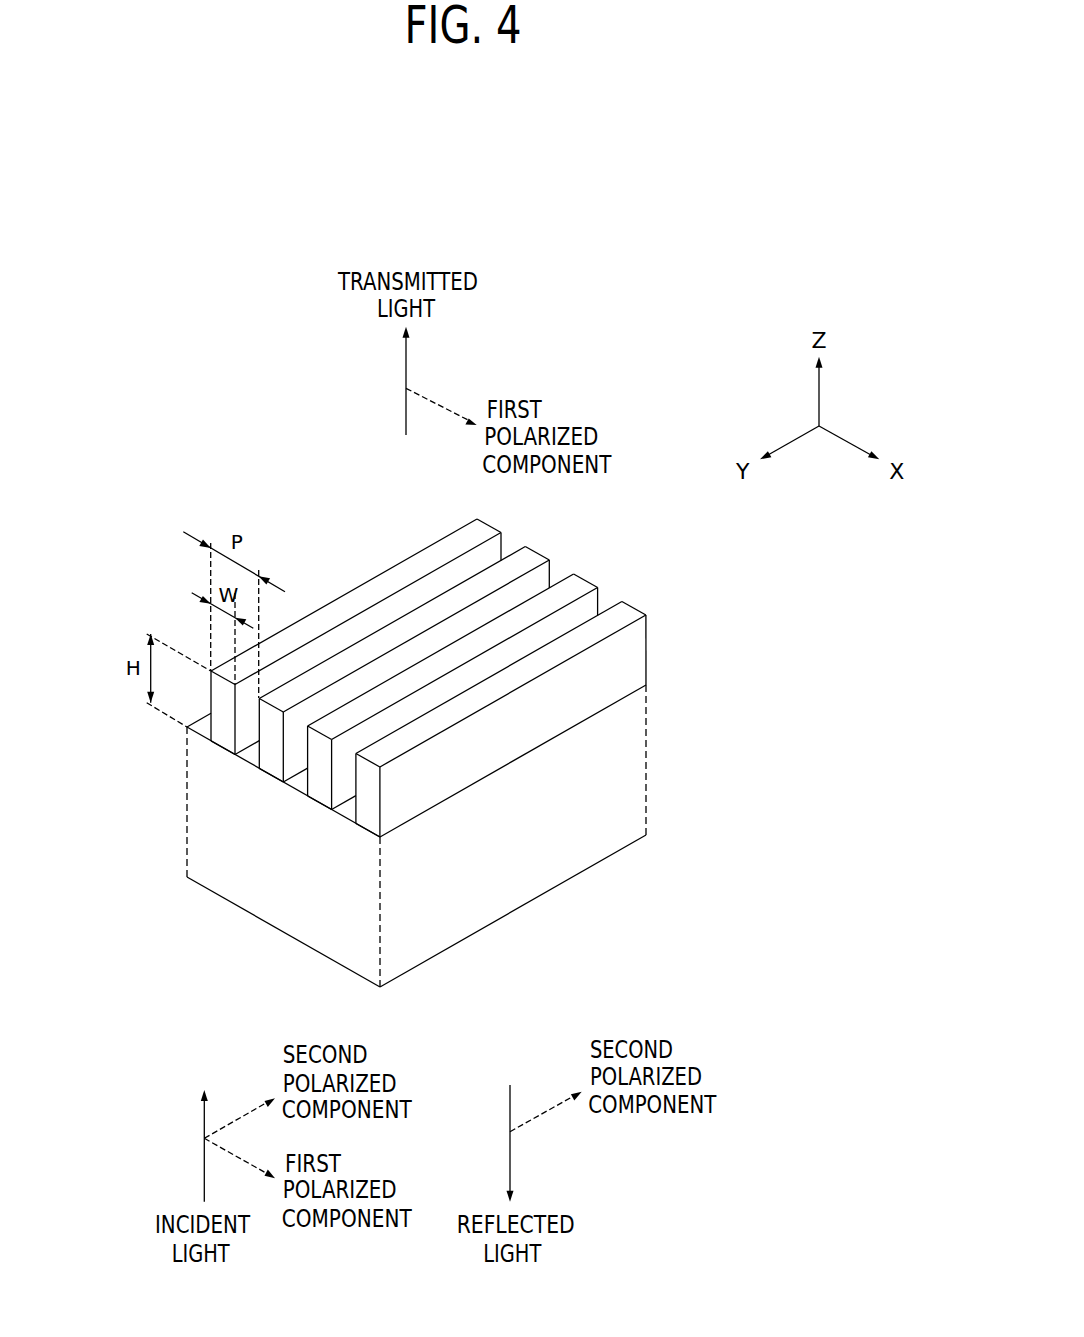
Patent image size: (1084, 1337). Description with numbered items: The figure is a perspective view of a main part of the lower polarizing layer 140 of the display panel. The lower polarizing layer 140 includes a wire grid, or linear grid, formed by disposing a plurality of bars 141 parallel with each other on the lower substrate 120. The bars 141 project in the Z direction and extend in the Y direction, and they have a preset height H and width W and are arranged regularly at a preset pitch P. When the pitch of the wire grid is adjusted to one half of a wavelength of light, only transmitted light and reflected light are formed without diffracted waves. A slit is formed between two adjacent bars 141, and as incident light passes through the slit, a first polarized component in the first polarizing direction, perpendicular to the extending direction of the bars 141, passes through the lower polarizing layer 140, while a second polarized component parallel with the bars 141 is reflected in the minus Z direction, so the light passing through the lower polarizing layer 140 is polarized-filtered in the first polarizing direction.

The lower substrate 120 is at (210, 811).
The lower polarizing layer 140 is at (434, 659).
The bars 141 is at (422, 548).